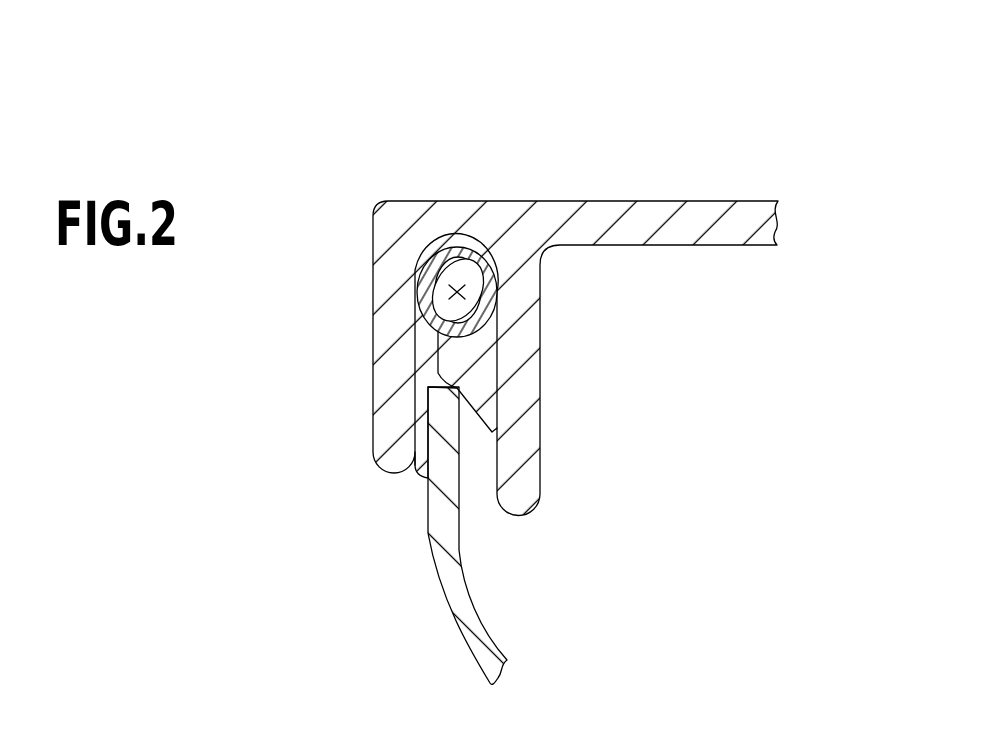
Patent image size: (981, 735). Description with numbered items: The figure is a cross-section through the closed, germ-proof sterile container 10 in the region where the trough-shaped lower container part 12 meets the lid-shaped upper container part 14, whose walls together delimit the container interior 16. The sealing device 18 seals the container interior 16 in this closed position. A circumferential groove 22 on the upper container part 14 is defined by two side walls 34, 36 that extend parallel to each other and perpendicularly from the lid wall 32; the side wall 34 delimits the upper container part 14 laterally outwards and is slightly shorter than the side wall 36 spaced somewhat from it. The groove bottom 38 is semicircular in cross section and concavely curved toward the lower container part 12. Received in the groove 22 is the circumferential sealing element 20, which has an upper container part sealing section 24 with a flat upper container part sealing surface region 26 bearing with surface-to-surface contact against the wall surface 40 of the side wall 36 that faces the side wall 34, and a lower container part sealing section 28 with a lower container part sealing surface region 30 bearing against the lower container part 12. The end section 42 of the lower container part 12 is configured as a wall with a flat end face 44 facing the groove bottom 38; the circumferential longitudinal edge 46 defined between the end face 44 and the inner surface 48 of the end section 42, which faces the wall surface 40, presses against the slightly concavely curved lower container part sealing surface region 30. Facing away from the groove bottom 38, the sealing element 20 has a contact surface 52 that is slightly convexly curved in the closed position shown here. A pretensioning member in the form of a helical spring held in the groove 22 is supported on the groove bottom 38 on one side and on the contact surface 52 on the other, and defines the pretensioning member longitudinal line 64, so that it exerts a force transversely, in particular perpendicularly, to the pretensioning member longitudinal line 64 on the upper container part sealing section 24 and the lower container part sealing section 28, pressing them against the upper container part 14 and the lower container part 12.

The sterile container 10 is at (728, 98).
The lower container part 12 is at (422, 552).
The upper container part 14 is at (620, 202).
The container interior 16 is at (704, 397).
The sealing device 18 is at (420, 341).
The sealing element 20 is at (515, 350).
The groove 22 is at (420, 266).
The upper container part sealing section 24 is at (522, 438).
The upper container part sealing surface region 26 is at (472, 411).
The lower container part sealing section 28 is at (452, 355).
The lower container part sealing surface region 30 is at (413, 440).
The lid wall 32 is at (712, 214).
The side wall 34 is at (398, 290).
The side wall 36 is at (520, 333).
The groove bottom 38 is at (473, 256).
The wall surface 40 is at (496, 488).
The end section 42 is at (446, 486).
The end face 44 is at (428, 413).
The longitudinal edge 46 is at (472, 381).
The inner surface 48 is at (460, 500).
The contact surface 52 is at (523, 262).
The pretensioning member longitudinal line 64 is at (415, 286).